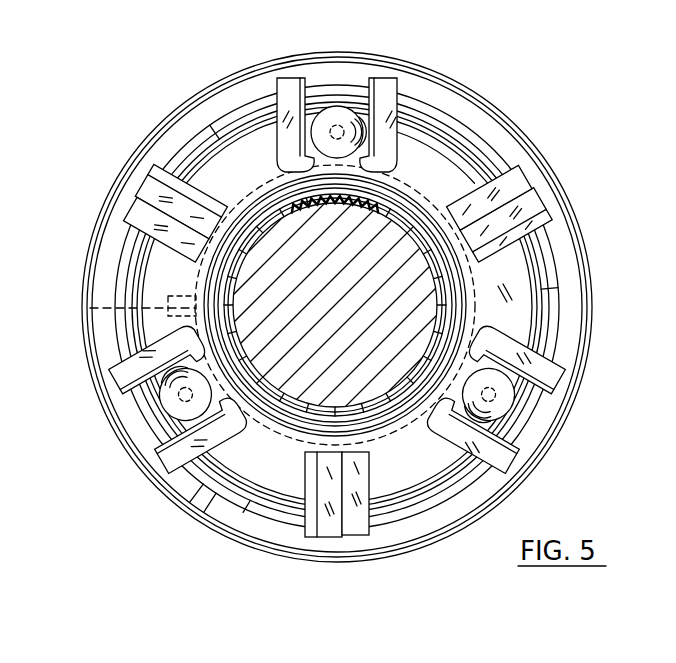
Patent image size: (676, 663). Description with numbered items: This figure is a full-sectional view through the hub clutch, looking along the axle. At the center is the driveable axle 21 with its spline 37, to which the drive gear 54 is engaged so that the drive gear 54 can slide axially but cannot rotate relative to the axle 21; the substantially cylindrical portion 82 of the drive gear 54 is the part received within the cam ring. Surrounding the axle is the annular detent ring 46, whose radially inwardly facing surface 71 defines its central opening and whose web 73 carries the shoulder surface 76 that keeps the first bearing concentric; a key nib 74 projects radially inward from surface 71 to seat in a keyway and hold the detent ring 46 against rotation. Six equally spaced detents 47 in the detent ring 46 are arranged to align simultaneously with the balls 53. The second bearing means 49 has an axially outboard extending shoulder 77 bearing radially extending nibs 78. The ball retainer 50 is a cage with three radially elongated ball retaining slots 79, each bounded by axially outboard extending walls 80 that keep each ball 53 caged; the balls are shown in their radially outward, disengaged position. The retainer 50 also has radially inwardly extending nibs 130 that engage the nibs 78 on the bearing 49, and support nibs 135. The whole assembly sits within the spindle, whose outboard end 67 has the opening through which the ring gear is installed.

The driveable axle 21 is at (318, 295).
The spline 37 is at (280, 186).
The annular detent ring 46 is at (425, 203).
The detent 47 is at (489, 197).
The second bearing means 49 is at (455, 158).
The actuator means retaining member (ball retainer) 50 is at (430, 110).
The ball 53 is at (341, 118).
The drive gear 54 is at (200, 492).
The outboard end of spindle 67 is at (176, 116).
The radially inwardly facing surface 71 is at (440, 217).
The web 73 is at (480, 187).
The key nib 74 is at (90, 308).
The shoulder surface 76 is at (520, 294).
The shoulder 77 is at (261, 98).
The nib 78 is at (211, 127).
The ball retaining slot 79 is at (322, 100).
The wall 80 is at (290, 77).
The cylindrical portion 82 is at (205, 500).
The radially inwardly extending nib 130 is at (336, 367).
The support nib 135 is at (512, 233).